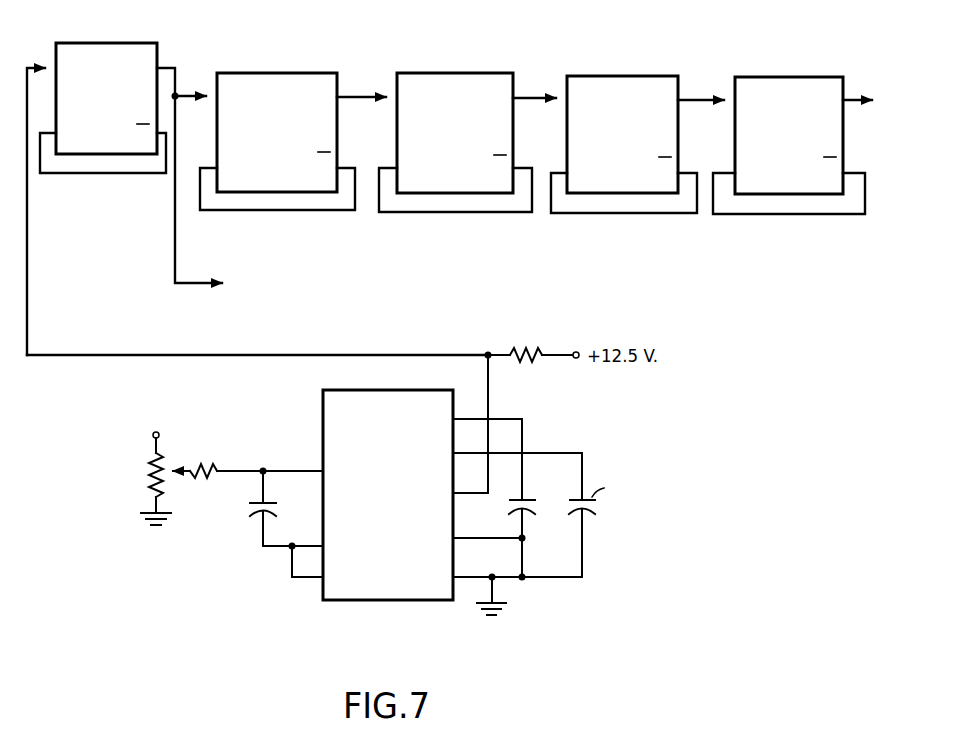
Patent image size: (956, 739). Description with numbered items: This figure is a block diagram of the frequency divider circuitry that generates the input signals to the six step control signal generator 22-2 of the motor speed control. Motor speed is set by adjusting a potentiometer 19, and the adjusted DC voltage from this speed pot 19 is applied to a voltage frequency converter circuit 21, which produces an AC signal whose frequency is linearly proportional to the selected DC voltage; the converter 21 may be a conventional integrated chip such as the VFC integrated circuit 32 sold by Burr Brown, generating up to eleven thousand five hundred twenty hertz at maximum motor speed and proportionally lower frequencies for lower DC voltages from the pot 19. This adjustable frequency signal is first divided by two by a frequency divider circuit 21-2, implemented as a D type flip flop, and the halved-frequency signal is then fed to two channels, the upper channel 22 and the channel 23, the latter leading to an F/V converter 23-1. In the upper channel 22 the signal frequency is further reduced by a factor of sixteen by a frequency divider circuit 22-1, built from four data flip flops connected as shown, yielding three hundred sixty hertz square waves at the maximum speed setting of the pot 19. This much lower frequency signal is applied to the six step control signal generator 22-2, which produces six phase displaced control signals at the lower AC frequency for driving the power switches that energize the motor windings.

The frequency divider circuit 21-2 is at (113, 41).
The upper channel 22 is at (190, 90).
The channel 23 is at (175, 222).
The F/V converter 23-1 is at (370, 285).
The frequency divider circuit 22-1 is at (709, 230).
The six step control signal generator 22-2 is at (887, 100).
The potentiometer 19 is at (147, 478).
The voltage frequency converter circuit 21 is at (434, 498).
The VFC integrated circuit 32 is at (386, 616).